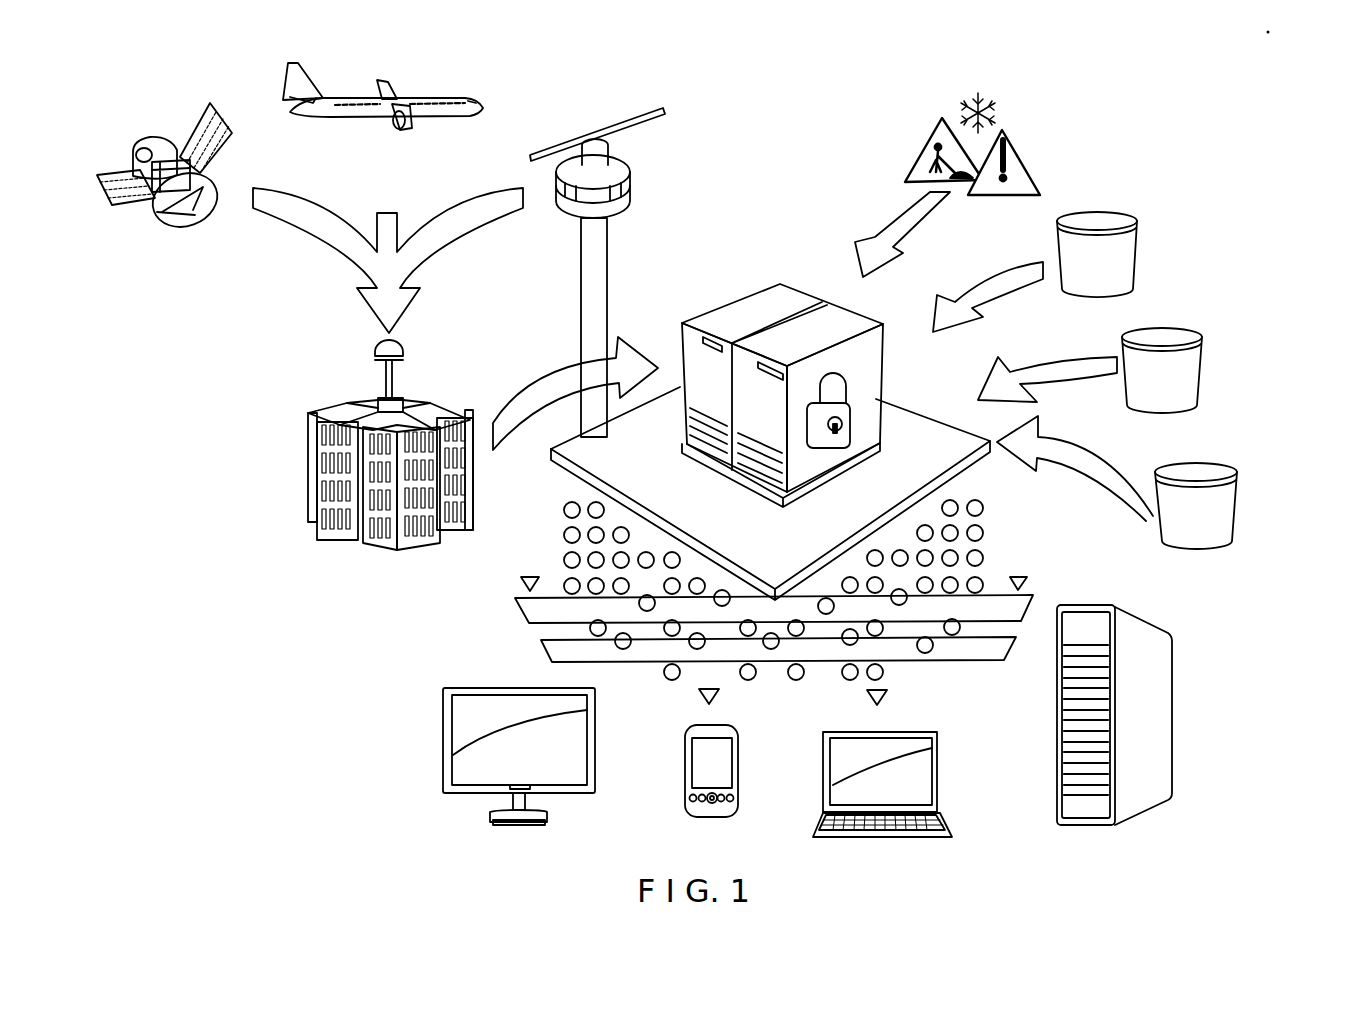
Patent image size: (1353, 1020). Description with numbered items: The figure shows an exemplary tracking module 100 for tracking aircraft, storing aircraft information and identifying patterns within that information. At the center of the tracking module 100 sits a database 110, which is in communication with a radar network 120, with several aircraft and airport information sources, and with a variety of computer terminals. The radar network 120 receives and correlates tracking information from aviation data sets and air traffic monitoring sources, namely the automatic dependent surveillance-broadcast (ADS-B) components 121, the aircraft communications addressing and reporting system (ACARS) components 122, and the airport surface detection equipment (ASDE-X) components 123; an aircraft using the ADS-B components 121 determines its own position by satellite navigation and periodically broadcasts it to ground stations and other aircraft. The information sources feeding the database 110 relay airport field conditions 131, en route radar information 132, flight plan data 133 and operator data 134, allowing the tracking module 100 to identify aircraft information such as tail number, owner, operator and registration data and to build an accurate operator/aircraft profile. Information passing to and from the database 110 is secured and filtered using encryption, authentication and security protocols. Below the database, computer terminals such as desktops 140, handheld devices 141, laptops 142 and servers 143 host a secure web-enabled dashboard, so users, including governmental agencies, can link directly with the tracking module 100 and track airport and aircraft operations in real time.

The tracking module 100 is at (812, 62).
The database 110 is at (730, 303).
The radar network 120 is at (360, 410).
The ADS-B components 121 is at (153, 221).
The ACARS components 122 is at (432, 108).
The ASDE-X components 123 is at (615, 155).
The airport field conditions source 131 is at (927, 143).
The en route radar information source 132 is at (1127, 237).
The flight plan data source 133 is at (1201, 348).
The operator data source 134 is at (1221, 525).
The desktops 140 is at (445, 765).
The handheld devices 141 is at (688, 772).
The laptops 142 is at (930, 768).
The servers 143 is at (1152, 752).